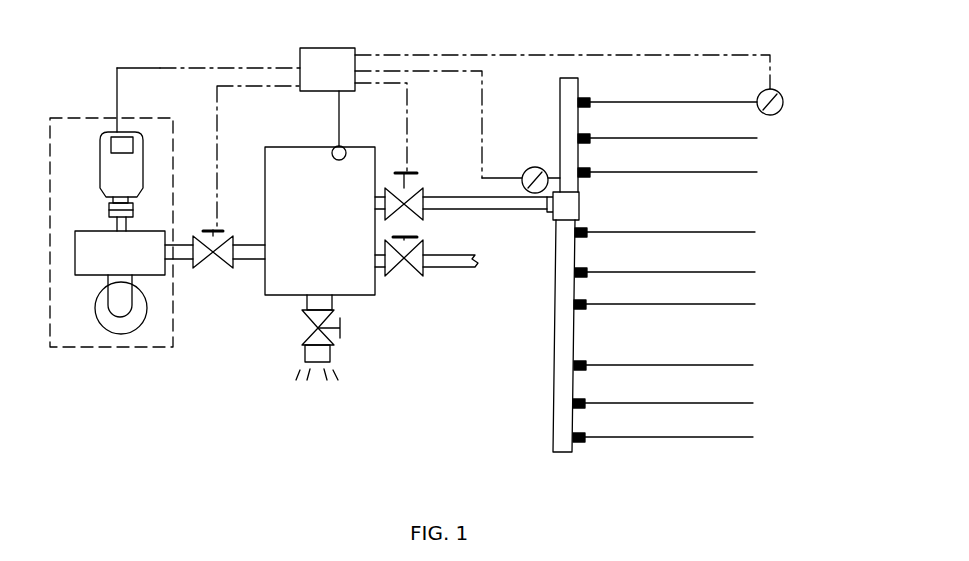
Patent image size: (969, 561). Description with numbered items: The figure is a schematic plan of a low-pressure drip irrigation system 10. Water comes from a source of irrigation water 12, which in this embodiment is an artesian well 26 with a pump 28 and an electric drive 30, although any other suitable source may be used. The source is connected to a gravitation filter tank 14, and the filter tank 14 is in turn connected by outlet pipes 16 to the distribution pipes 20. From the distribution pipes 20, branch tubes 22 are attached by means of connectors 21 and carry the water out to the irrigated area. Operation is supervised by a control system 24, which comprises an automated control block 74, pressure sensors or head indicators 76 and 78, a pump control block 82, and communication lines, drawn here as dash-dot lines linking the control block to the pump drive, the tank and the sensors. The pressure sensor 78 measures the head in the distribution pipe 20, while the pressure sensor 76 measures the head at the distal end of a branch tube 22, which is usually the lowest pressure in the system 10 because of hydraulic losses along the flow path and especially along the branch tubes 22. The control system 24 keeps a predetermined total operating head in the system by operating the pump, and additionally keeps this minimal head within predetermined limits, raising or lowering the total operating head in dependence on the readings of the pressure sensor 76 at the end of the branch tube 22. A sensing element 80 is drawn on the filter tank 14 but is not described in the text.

The low-pressure drip irrigation system 10 is at (385, 385).
The source of irrigation water 12 is at (153, 118).
The gravitation filter tank 14 is at (332, 229).
The outlet pipes 16 is at (445, 196).
The distribution pipes 20 is at (553, 402).
The connectors 21 is at (578, 442).
The branch tubes 22 is at (660, 232).
The control system 24 is at (292, 49).
The artesian well 26 is at (108, 320).
The pump 28 is at (133, 264).
The electric drive 30 is at (133, 183).
The automated control block 74 is at (339, 79).
The pressure sensor 76 is at (771, 115).
The pressure sensor 78 is at (525, 172).
The level sensor 80 is at (346, 155).
The pump control block 82 is at (112, 148).